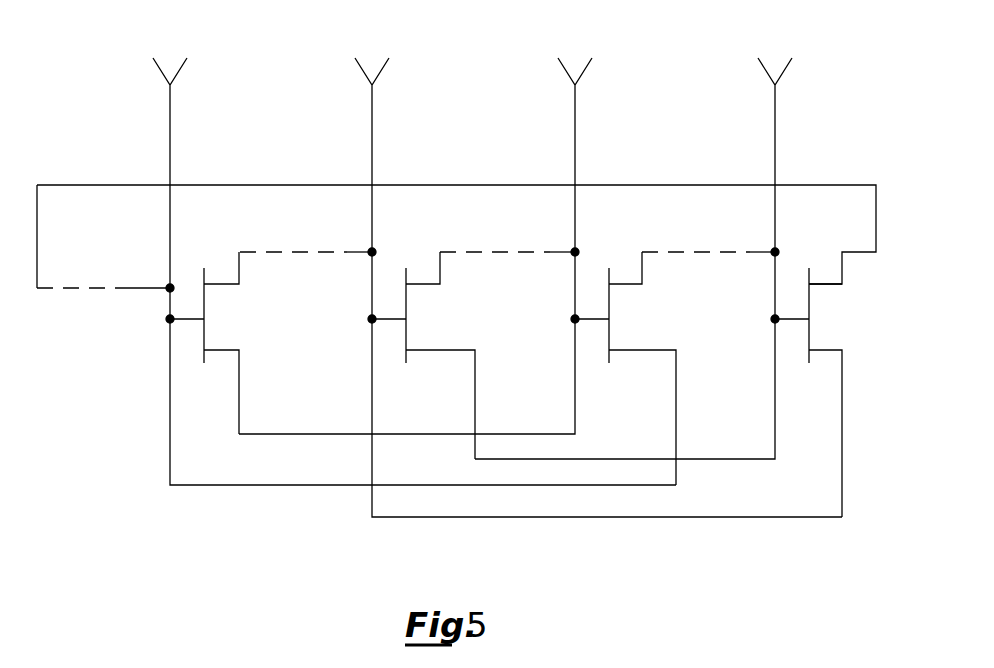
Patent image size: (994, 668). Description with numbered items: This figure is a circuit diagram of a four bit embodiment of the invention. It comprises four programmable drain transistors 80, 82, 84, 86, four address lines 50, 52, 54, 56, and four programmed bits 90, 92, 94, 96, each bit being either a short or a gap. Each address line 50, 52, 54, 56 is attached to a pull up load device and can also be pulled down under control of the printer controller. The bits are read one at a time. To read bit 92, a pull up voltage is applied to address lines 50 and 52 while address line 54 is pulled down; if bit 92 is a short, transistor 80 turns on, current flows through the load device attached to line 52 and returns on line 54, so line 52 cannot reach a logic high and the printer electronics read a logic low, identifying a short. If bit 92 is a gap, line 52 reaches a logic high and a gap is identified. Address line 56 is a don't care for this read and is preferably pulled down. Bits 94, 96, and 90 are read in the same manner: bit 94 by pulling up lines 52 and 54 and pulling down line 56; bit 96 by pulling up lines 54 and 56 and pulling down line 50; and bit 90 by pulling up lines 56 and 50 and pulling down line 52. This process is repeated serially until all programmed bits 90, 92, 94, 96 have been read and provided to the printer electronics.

The address line 50 is at (170, 138).
The address line 52 is at (372, 138).
The address line 54 is at (575, 137).
The address line 56 is at (775, 137).
The programmable drain transistor 80 is at (206, 362).
The programmable drain transistor 82 is at (408, 362).
The programmable drain transistor 84 is at (611, 362).
The programmable drain transistor 86 is at (811, 362).
The programmed bit 90 is at (118, 288).
The programmed bit 92 is at (310, 252).
The programmed bit 94 is at (520, 252).
The programmed bit 96 is at (722, 252).